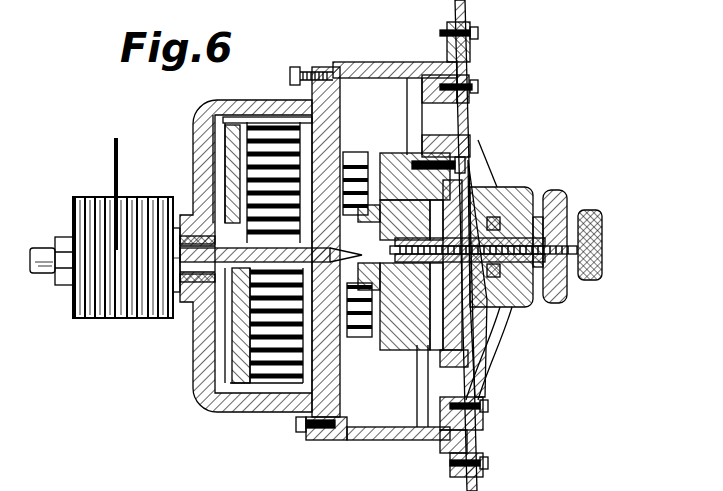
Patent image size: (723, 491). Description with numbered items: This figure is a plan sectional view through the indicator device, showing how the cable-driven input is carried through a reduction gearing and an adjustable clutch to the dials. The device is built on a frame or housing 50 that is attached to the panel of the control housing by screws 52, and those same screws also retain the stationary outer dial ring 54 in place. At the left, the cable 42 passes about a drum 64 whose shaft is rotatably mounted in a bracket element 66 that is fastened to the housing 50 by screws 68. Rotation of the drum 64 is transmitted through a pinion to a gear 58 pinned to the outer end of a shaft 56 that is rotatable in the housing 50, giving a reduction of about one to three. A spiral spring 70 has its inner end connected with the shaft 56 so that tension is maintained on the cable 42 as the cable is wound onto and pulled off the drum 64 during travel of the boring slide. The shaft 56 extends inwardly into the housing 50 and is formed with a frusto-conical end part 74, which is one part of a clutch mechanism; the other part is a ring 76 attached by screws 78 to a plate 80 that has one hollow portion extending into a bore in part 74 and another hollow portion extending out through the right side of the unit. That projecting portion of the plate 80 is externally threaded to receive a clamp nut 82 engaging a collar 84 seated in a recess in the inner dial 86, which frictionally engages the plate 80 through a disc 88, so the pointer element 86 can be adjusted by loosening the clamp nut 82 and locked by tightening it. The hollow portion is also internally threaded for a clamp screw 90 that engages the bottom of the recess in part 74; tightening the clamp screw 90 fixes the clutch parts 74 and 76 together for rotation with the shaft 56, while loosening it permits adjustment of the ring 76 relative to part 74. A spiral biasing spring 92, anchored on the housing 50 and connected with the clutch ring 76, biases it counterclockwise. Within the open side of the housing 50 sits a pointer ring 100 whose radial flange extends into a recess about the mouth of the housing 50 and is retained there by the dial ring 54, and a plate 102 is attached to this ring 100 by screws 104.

The cable 42 is at (119, 180).
The housing 50 is at (405, 62).
The screws 52 is at (478, 33).
The outer dial ring 54 is at (470, 55).
The shaft 56 is at (183, 305).
The gear 58 is at (222, 103).
The drum 64 is at (103, 318).
The bracket element 66 is at (190, 125).
The screws 68 is at (296, 425).
The spiral spring 70 is at (262, 120).
The frusto-conical end part 74 is at (482, 172).
The ring 76 is at (395, 160).
The screws 78 is at (480, 150).
The plate 80 is at (490, 335).
The clamp nut 82 is at (565, 200).
The collar 84 is at (530, 197).
The inner dial 86 is at (500, 306).
The disc 88 is at (493, 217).
The clamp screw 90 is at (600, 216).
The spiral biasing spring 92 is at (360, 150).
The pointer ring 100 is at (470, 77).
The plate 102 is at (470, 102).
The screws 104 is at (478, 88).